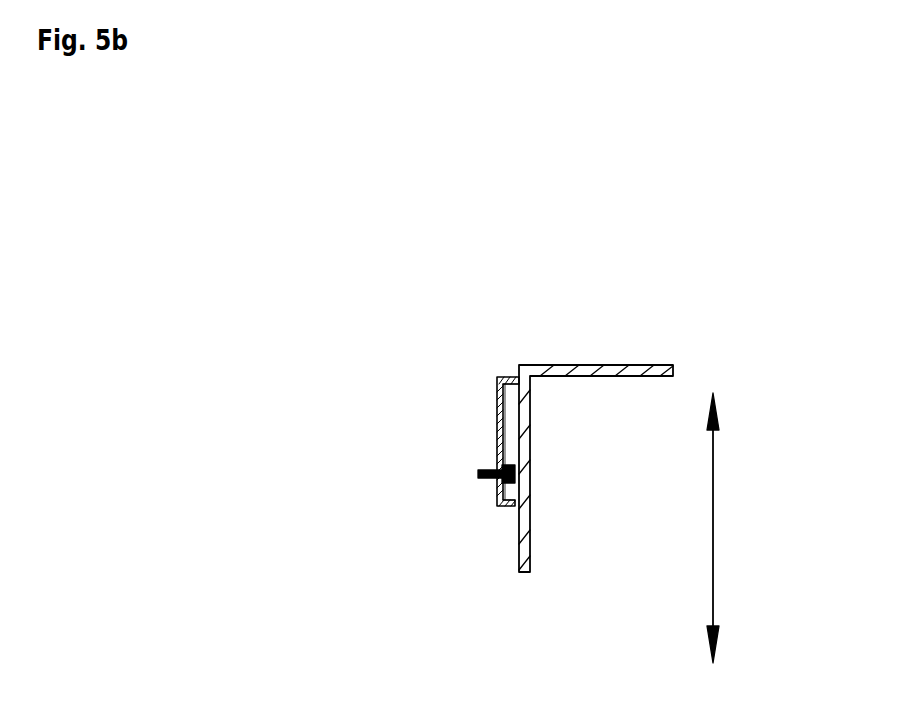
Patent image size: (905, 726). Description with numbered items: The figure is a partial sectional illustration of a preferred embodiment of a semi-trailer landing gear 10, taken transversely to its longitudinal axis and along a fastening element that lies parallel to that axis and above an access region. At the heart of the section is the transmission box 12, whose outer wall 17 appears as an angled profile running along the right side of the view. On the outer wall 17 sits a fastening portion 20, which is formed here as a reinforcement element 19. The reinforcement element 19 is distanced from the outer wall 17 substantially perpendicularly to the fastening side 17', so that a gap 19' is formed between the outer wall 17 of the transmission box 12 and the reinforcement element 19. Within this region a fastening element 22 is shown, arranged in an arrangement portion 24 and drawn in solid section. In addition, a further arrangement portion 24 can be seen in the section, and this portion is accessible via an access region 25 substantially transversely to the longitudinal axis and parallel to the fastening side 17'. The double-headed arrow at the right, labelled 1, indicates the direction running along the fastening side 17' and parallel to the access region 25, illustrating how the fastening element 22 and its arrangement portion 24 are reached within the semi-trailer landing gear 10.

The semi-trailer landing gear 10 is at (603, 245).
The transmission box 12 is at (593, 373).
The outer wall 17 is at (557, 527).
The fastening side 17' is at (373, 401).
The reinforcement element 19 is at (428, 413).
The gap 19' is at (537, 346).
The fastening portion 20 is at (463, 413).
The fastening element 22 is at (488, 482).
The arrangement portion 24 is at (498, 435).
The access region 25 is at (427, 489).
The direction of insertion 1 is at (713, 532).